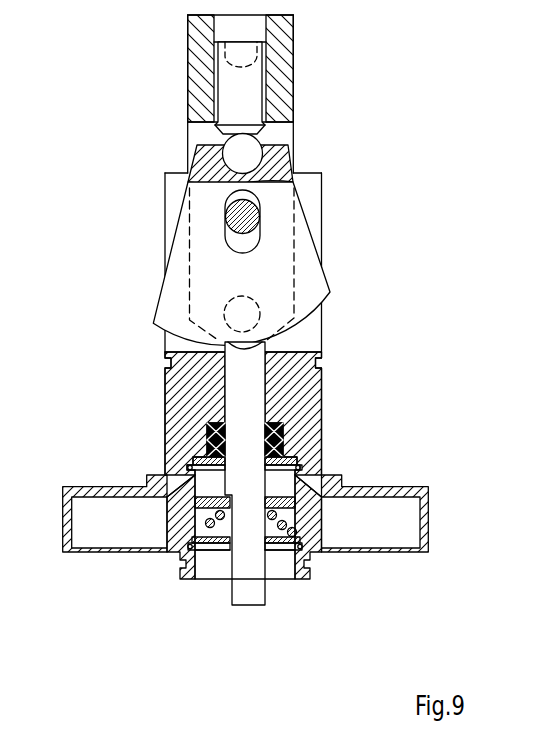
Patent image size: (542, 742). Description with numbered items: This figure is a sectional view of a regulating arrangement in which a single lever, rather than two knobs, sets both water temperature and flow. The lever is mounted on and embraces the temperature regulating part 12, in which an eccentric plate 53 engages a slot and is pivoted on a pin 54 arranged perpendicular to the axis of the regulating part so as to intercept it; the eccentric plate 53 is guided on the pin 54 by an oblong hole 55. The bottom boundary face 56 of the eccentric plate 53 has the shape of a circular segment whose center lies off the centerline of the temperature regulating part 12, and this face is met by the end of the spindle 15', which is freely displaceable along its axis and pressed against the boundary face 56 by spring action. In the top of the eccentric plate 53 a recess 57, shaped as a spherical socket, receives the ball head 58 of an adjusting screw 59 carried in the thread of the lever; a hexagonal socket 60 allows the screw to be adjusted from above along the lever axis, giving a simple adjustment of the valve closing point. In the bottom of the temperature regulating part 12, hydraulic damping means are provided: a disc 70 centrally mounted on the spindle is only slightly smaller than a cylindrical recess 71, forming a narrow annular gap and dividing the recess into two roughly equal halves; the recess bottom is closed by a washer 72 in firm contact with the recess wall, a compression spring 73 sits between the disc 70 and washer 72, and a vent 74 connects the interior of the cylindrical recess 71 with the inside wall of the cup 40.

The hexagonal socket 60 is at (238, 53).
The adjusting screw 59 is at (243, 95).
The ball 58 is at (243, 154).
The recess 57 is at (227, 173).
The pin 54 is at (245, 216).
The oblong hole 55 is at (240, 242).
The eccentric plate 53 is at (303, 252).
The bottom boundary face 56 is at (332, 323).
The spindle 15' is at (328, 473).
The temperature regulating part 12 is at (308, 432).
The cup 40 is at (423, 520).
The disc 70 is at (198, 502).
The compression spring 73 is at (198, 530).
The washer 72 is at (218, 543).
The cylindrical recess 71 is at (283, 567).
The vent 74 is at (320, 497).